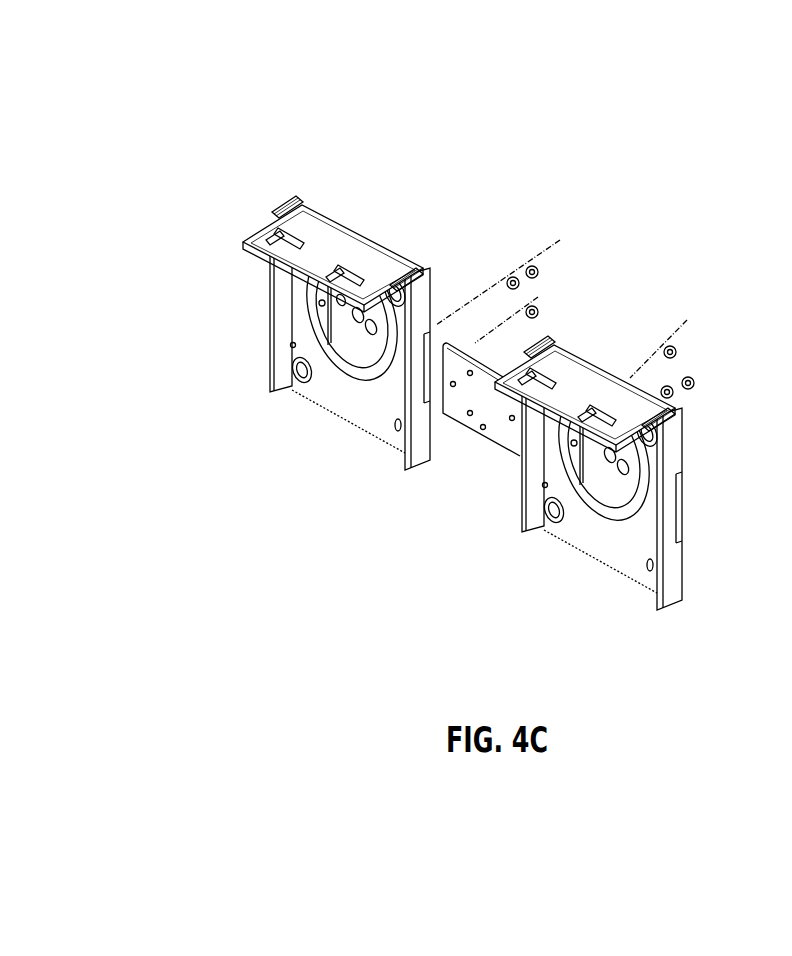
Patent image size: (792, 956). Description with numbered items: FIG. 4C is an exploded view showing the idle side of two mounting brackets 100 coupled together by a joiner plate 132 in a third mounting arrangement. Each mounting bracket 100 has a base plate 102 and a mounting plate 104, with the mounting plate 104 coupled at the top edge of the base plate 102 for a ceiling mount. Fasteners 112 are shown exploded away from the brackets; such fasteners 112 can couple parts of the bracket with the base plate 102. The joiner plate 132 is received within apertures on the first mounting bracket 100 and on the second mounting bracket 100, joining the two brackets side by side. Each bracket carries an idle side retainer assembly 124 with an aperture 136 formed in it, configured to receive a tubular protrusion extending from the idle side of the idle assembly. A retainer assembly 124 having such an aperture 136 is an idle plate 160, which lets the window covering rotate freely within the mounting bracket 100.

The mounting bracket 100 is at (303, 142).
The base plate 102 is at (362, 225).
The mounting plate 104 is at (261, 229).
The fasteners 112 is at (584, 301).
The retainer assembly 124 is at (371, 338).
The joiner plate 132 is at (482, 436).
The aperture 136 is at (357, 354).
The idle plate 160 is at (343, 323).